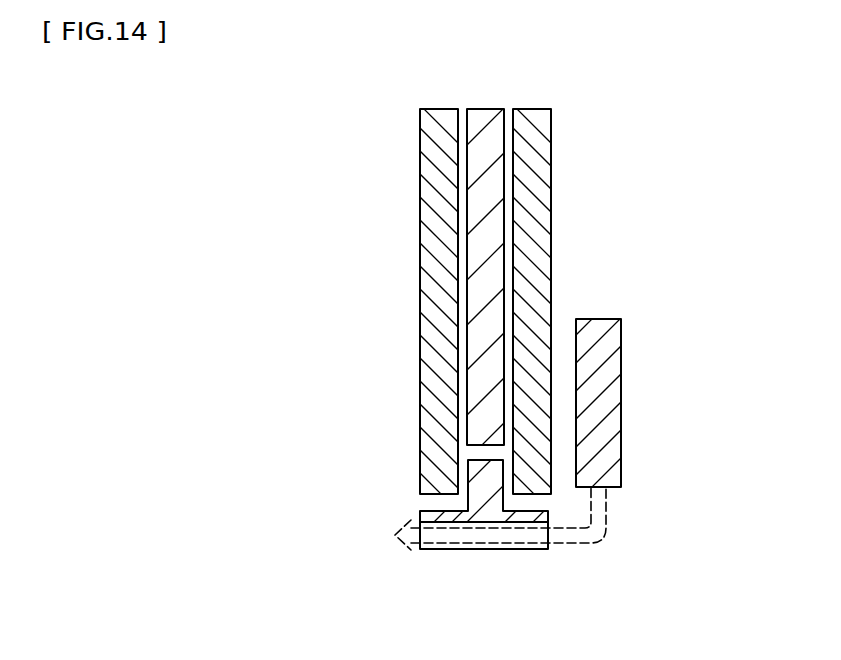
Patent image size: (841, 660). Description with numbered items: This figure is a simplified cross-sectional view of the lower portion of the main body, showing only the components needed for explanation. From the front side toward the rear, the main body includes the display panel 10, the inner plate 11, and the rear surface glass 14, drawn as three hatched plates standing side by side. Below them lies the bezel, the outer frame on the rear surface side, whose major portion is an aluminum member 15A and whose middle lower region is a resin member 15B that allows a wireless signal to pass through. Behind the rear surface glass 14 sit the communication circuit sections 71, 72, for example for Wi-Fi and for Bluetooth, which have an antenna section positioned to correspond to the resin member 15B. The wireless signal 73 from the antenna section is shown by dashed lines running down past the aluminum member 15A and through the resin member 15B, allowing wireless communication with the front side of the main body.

The display panel 10 is at (420, 165).
The inner plate 11 is at (467, 268).
The rear surface glass 14 is at (551, 163).
The aluminum member 15A is at (420, 513).
The resin member 15B is at (487, 550).
The communication circuit section 71 is at (642, 396).
The communication circuit section 72 is at (621, 403).
The wireless signal 73 is at (607, 502).